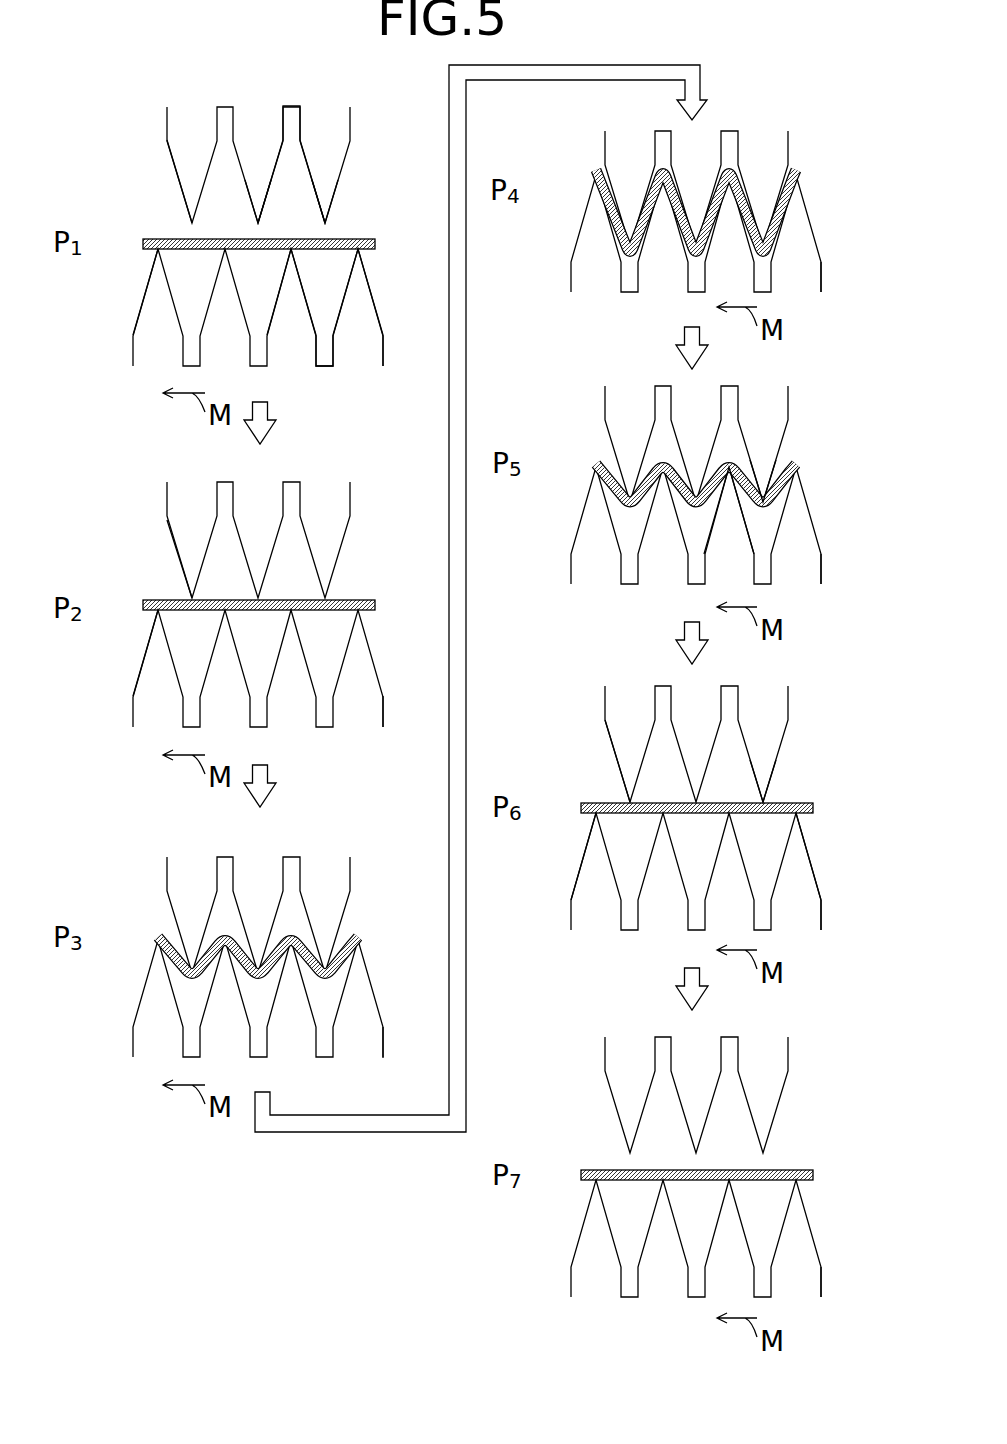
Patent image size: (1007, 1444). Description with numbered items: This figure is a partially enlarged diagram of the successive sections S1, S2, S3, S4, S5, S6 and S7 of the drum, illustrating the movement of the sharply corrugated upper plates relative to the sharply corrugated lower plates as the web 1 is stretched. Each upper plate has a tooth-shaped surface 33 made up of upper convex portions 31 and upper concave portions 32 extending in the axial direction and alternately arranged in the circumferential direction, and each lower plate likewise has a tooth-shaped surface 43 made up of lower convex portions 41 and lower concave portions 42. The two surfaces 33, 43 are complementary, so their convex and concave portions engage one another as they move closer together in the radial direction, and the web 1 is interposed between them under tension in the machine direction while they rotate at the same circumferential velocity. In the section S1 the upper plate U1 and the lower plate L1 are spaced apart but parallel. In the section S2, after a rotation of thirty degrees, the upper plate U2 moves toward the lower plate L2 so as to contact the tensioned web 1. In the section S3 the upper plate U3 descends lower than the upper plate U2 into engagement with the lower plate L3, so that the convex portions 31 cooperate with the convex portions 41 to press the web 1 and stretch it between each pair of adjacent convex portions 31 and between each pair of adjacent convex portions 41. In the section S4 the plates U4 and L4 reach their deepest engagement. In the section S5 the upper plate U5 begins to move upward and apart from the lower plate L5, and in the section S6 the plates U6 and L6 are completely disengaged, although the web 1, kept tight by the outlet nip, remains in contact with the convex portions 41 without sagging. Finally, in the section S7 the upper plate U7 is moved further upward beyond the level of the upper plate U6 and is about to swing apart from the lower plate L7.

The web 1 is at (363, 234).
The upper convex portions 31 is at (325, 197).
The upper concave portions 32 is at (293, 184).
The tooth-shaped surface 33 is at (175, 172).
The lower convex portions 41 is at (287, 278).
The lower concave portions 42 is at (333, 270).
The tooth-shaped surface 43 is at (145, 292).
The sharply corrugated upper plate U1 is at (160, 132).
The sharply corrugated upper plate U2 is at (160, 510).
The sharply corrugated upper plate U3 is at (160, 882).
The sharply corrugated upper plate U4 is at (597, 142).
The sharply corrugated upper plate U5 is at (597, 398).
The sharply corrugated upper plate U6 is at (597, 712).
The sharply corrugated upper plate U7 is at (597, 1062).
The sharply corrugated lower plate L1 is at (120, 332).
The sharply corrugated lower plate L2 is at (123, 693).
The sharply corrugated lower plate L3 is at (123, 1024).
The sharply corrugated lower plate L4 is at (560, 258).
The sharply corrugated lower plate L5 is at (558, 513).
The sharply corrugated lower plate L6 is at (558, 895).
The sharply corrugated lower plate L7 is at (558, 1263).
The section S1 is at (360, 352).
The section S2 is at (360, 713).
The section S3 is at (360, 1043).
The section S4 is at (795, 278).
The section S5 is at (795, 573).
The section S6 is at (795, 915).
The section S7 is at (795, 1283).